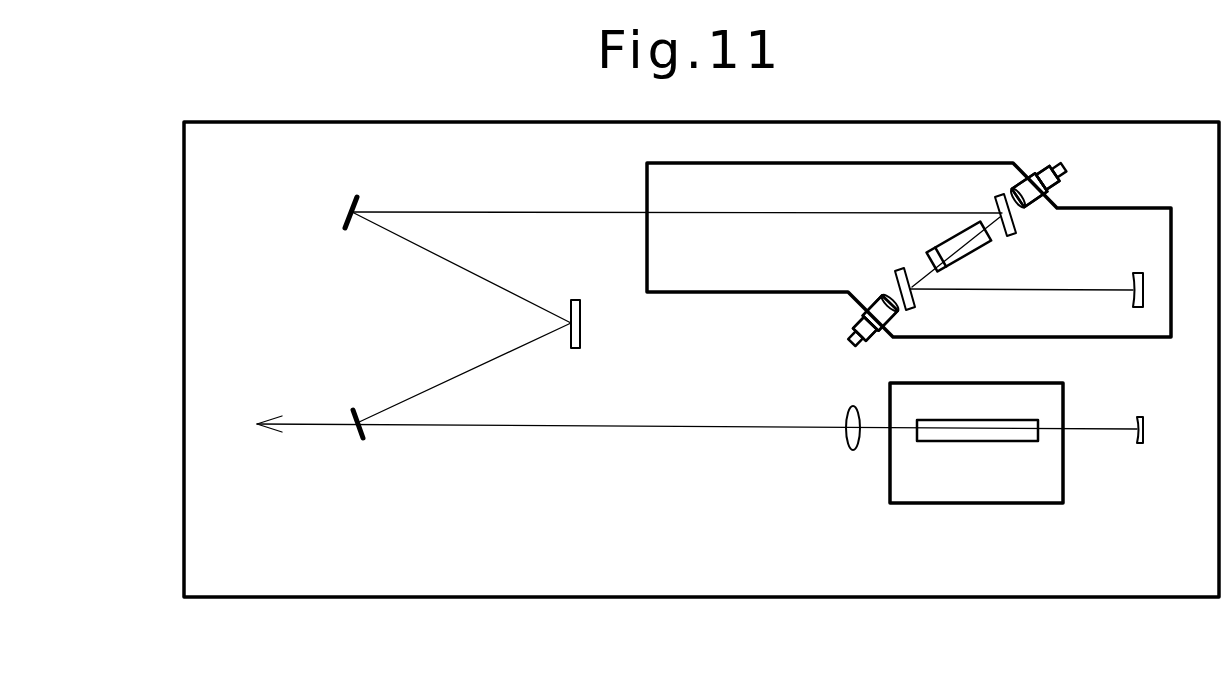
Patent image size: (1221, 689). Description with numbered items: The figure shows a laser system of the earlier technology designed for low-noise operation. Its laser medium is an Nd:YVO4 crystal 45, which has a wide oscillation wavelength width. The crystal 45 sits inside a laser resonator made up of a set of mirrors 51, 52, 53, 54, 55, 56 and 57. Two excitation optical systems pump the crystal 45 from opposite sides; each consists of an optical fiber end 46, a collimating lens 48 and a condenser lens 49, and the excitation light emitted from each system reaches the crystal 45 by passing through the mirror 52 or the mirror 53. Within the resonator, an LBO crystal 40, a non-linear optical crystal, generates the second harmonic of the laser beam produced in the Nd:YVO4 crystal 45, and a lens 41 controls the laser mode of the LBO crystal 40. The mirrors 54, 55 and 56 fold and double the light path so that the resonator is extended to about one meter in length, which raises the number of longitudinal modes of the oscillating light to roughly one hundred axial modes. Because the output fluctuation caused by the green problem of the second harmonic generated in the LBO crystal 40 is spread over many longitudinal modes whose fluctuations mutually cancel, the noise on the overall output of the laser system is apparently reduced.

The LBO crystal 40 is at (967, 442).
The lens 41 is at (851, 452).
The Nd:YVO4 crystal 45 is at (984, 248).
The optical fiber end 46 is at (1066, 170).
The collimating lens 48 is at (1060, 196).
The condenser lens 49 is at (1030, 207).
The mirror 51 is at (1138, 272).
The mirror 52 is at (900, 270).
The mirror 53 is at (997, 202).
The mirror 54 is at (353, 200).
The mirror 55 is at (580, 306).
The mirror 56 is at (355, 410).
The mirror 57 is at (1134, 446).